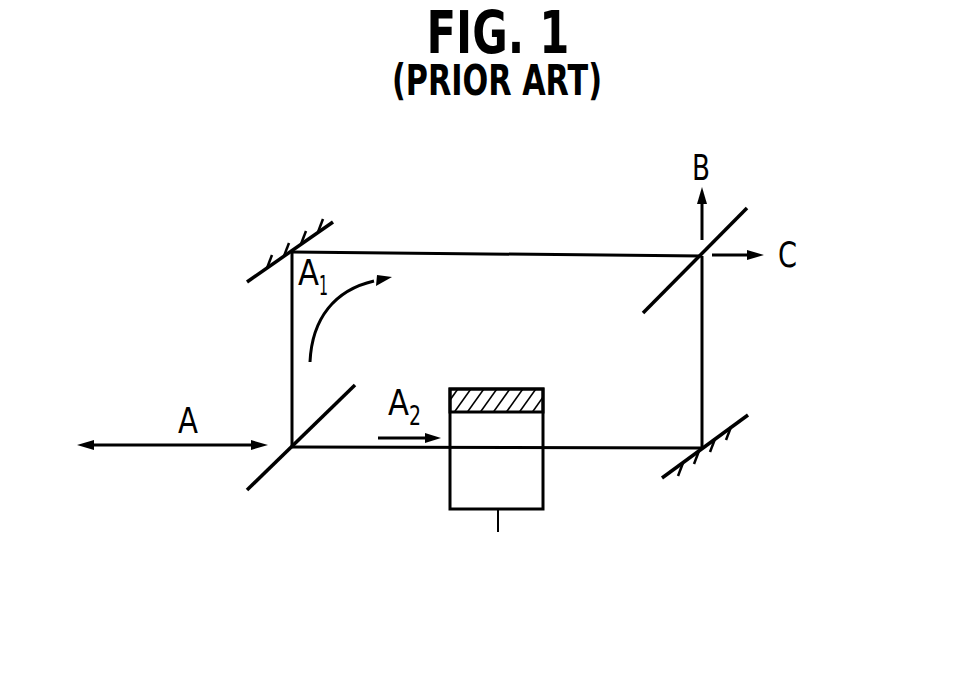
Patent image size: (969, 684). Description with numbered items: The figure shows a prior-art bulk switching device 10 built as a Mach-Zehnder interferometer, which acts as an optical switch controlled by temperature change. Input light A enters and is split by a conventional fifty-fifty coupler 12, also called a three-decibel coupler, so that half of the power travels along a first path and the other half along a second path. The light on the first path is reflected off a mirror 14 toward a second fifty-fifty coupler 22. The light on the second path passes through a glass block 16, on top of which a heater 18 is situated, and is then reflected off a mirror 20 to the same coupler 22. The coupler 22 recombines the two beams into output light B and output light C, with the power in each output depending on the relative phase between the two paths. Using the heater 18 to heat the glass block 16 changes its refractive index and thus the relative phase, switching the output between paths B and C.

The bulk switching device 10 is at (248, 548).
The 50/50 coupler 12 is at (278, 465).
The mirror 14 is at (333, 222).
The glass block 16 is at (545, 430).
The heater 18 is at (545, 400).
The mirror 20 is at (748, 419).
The 50/50 coupler 22 is at (742, 218).